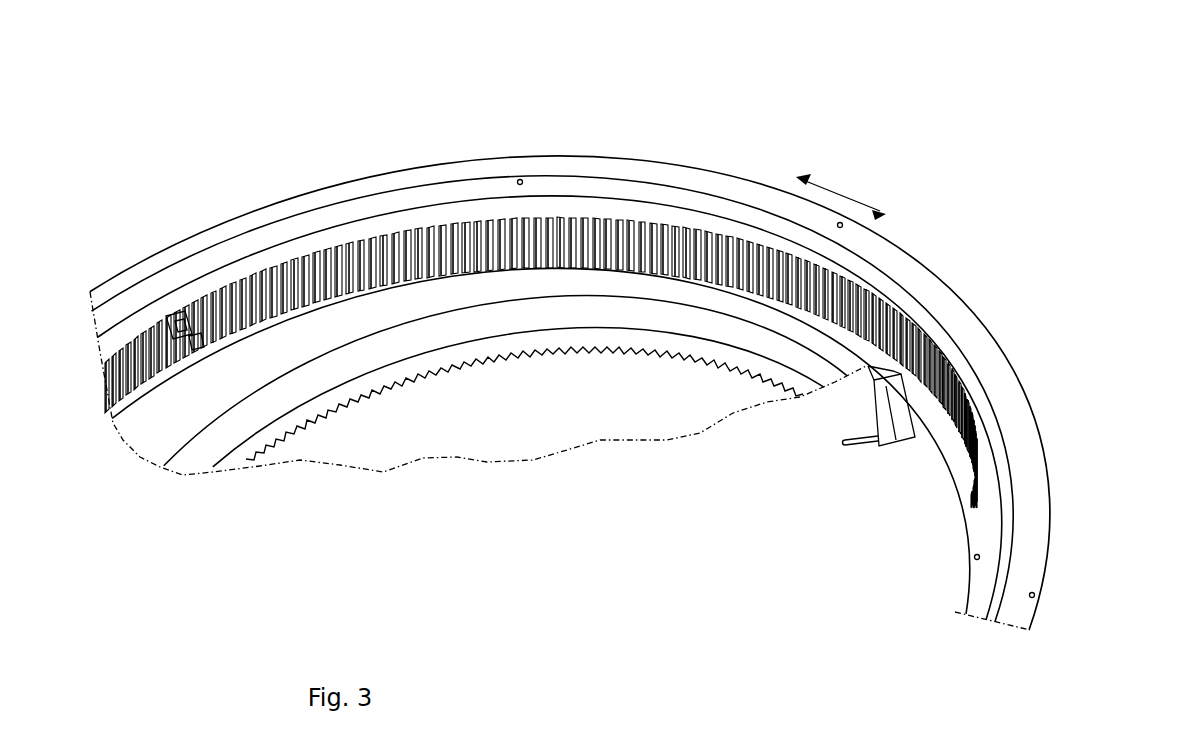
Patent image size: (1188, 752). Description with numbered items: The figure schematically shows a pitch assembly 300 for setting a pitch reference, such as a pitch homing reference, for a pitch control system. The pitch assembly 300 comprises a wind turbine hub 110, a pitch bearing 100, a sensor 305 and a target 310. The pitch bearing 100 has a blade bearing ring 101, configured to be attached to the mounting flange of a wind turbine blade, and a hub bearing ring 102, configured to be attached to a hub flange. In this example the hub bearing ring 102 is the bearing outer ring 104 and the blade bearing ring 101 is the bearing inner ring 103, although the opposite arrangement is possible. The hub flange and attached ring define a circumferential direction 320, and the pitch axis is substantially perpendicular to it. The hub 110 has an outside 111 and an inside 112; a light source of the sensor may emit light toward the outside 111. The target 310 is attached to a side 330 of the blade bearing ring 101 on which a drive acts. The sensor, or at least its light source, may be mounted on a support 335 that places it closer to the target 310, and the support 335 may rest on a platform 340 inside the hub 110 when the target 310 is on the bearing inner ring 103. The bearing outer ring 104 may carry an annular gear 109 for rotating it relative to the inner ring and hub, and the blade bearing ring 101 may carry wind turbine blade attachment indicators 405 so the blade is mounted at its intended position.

The pitch bearing 100 is at (985, 652).
The blade bearing ring 101 is at (987, 530).
The hub bearing ring 102 is at (1037, 558).
The bearing inner ring 103 is at (1000, 503).
The bearing outer ring 104 is at (1037, 487).
The annular gear 109 is at (455, 275).
The wind turbine hub 110 is at (167, 412).
The outside of the hub 111 is at (737, 111).
The inside of the hub 112 is at (553, 514).
The pitch assembly 300 is at (966, 100).
The sensor 305 is at (867, 365).
The target 310 is at (205, 350).
The circumferential direction 320 is at (846, 193).
The side of the blade bearing ring 330 is at (350, 300).
The support 335 is at (885, 446).
The platform 340 is at (683, 518).
The wind turbine blade attachment indicators 405 is at (522, 180).